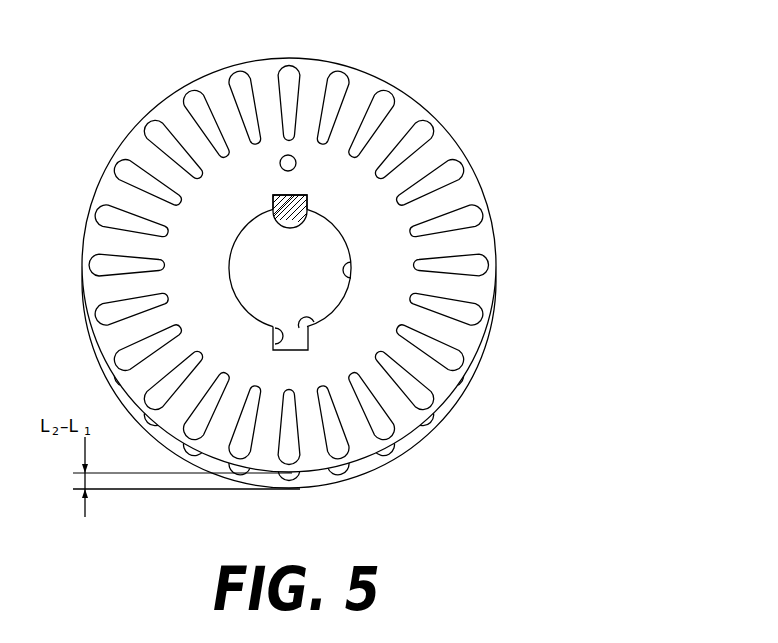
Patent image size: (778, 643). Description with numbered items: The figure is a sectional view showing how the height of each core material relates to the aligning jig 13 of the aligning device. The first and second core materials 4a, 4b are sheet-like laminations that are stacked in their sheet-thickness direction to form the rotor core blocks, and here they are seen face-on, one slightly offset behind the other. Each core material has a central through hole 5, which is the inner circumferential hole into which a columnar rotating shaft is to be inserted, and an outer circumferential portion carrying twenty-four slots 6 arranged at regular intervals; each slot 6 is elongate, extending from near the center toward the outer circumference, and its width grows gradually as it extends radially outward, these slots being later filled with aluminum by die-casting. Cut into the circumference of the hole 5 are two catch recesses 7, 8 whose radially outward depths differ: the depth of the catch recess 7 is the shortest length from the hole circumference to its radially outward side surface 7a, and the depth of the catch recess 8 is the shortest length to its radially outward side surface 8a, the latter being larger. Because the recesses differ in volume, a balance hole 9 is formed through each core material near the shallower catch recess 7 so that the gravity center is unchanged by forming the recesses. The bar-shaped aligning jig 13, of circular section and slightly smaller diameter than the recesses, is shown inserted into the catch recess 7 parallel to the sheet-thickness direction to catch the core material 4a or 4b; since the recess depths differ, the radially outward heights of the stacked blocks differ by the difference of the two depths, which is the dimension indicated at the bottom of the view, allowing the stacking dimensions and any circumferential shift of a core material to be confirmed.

The first core material 4a is at (419, 446).
The second core material 4b is at (104, 164).
The through hole 5 is at (356, 270).
The slot 6 is at (284, 88).
The catch recess 7 is at (296, 227).
The side surface 7a is at (272, 196).
The catch recess 8 is at (316, 321).
The side surface 8a is at (272, 338).
The balance hole 9 is at (296, 167).
The aligning jig 13 is at (276, 213).